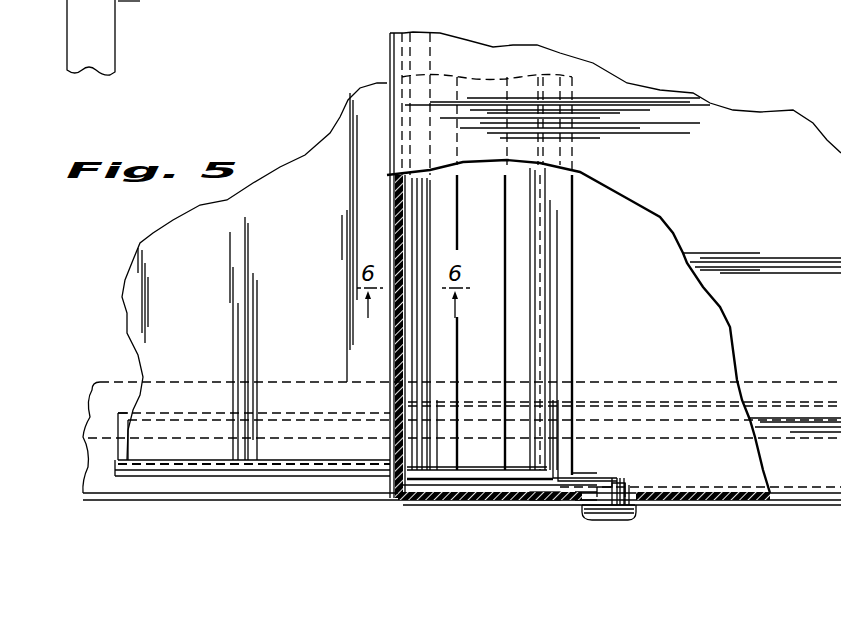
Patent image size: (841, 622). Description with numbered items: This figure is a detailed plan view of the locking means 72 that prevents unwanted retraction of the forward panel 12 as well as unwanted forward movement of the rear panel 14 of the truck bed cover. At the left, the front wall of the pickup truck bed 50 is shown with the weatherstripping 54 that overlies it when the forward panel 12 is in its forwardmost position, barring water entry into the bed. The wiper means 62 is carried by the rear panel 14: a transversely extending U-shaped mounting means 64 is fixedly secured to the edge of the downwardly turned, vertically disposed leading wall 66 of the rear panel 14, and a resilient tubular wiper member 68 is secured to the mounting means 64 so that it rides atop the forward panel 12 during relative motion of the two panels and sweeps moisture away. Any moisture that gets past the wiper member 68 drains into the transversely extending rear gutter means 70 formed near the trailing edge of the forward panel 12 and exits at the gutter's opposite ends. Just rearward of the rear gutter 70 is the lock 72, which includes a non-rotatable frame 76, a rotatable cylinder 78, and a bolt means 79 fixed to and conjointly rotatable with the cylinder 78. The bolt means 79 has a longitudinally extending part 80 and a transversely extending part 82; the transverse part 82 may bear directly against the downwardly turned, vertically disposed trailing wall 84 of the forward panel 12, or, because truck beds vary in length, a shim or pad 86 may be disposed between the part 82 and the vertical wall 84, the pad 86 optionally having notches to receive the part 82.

The forward panel 12 is at (137, 293).
The rear panel 14 is at (723, 115).
The front wall of pickup truck bed 50 is at (104, 34).
The weatherstripping 54 is at (86, 6).
The wiper means 62 is at (384, 60).
The mounting means 64 is at (388, 364).
The leading wall of rear panel 66 is at (402, 43).
The wiper member 68 is at (430, 204).
The rear gutter means 70 is at (505, 221).
The locking means 72 is at (580, 526).
The non-rotatable frame 76 is at (630, 517).
The rotatable cylinder 78 is at (628, 488).
The bolt means 79 is at (540, 492).
The longitudinally extending part 80 is at (580, 478).
The transversely extending part 82 is at (558, 415).
The trailing wall of forward panel 84 is at (543, 330).
The shim or pad 86 is at (550, 413).